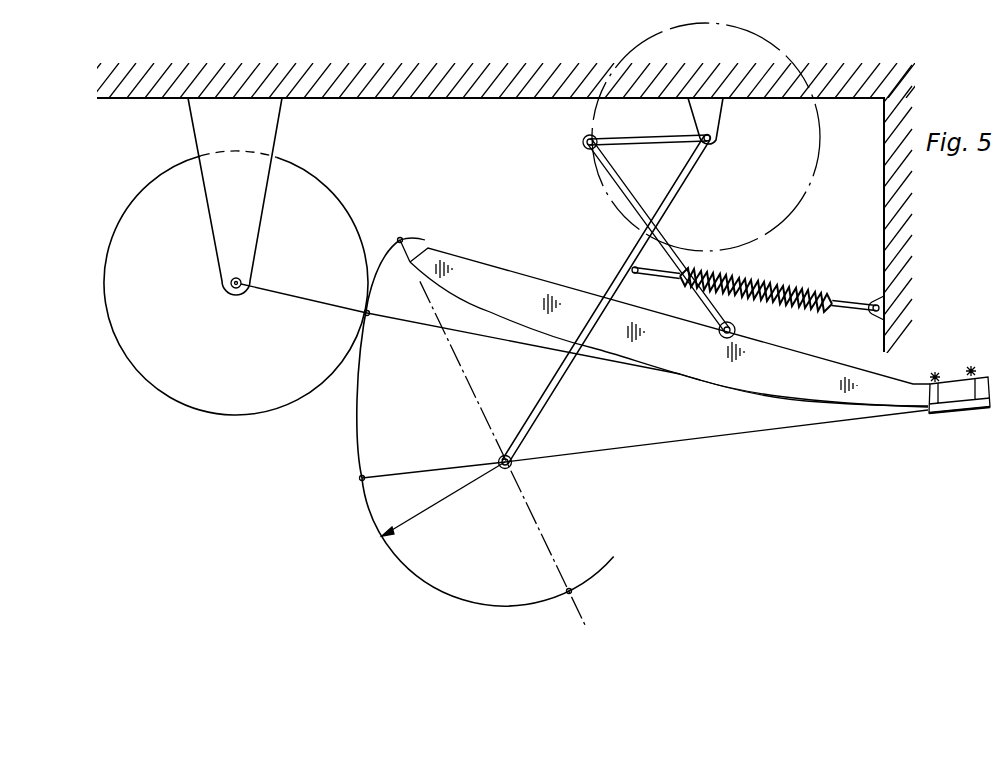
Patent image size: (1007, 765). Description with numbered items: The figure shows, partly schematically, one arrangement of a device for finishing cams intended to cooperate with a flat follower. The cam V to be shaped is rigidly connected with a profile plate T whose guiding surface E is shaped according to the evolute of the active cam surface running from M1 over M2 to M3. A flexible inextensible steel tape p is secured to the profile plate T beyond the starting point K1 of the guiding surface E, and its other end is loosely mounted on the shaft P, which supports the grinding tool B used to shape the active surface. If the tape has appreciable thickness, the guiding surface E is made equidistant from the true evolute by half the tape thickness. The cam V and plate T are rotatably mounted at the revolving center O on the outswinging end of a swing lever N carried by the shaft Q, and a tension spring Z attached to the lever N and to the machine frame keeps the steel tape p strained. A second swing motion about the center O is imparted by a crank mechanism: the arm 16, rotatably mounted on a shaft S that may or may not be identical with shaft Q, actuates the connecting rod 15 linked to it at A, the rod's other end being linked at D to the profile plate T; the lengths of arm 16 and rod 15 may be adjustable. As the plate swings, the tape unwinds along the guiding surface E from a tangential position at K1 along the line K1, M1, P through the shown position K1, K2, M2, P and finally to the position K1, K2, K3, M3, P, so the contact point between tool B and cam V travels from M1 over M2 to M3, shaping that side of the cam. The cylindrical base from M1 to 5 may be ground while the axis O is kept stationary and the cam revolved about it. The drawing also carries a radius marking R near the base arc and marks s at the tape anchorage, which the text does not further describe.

The arm 16 is at (629, 140).
The connecting rod 15 is at (622, 188).
The link point A is at (581, 143).
The shaft Q is at (720, 127).
The shaft S is at (606, 298).
The link point D is at (735, 330).
The swing lever N is at (641, 265).
The tension spring Z is at (782, 290).
The guiding surface E is at (492, 312).
The profile plate T is at (796, 375).
The steel tape p is at (523, 343).
The starting point of guiding surface K1 is at (927, 408).
The point on guiding surface K2 is at (717, 388).
The point on guiding surface K3 is at (399, 259).
The grinding tool B is at (236, 256).
The shaft P is at (297, 300).
The cam V is at (390, 359).
The point of active cam surface M1 is at (364, 476).
The point of active cam surface M2 is at (357, 325).
The vertex of cam profile M3 is at (382, 206).
The revolving center of cam O is at (674, 453).
The radius R is at (433, 508).
The end point of cylindrical base 5 is at (576, 598).
The marks s is at (958, 369).